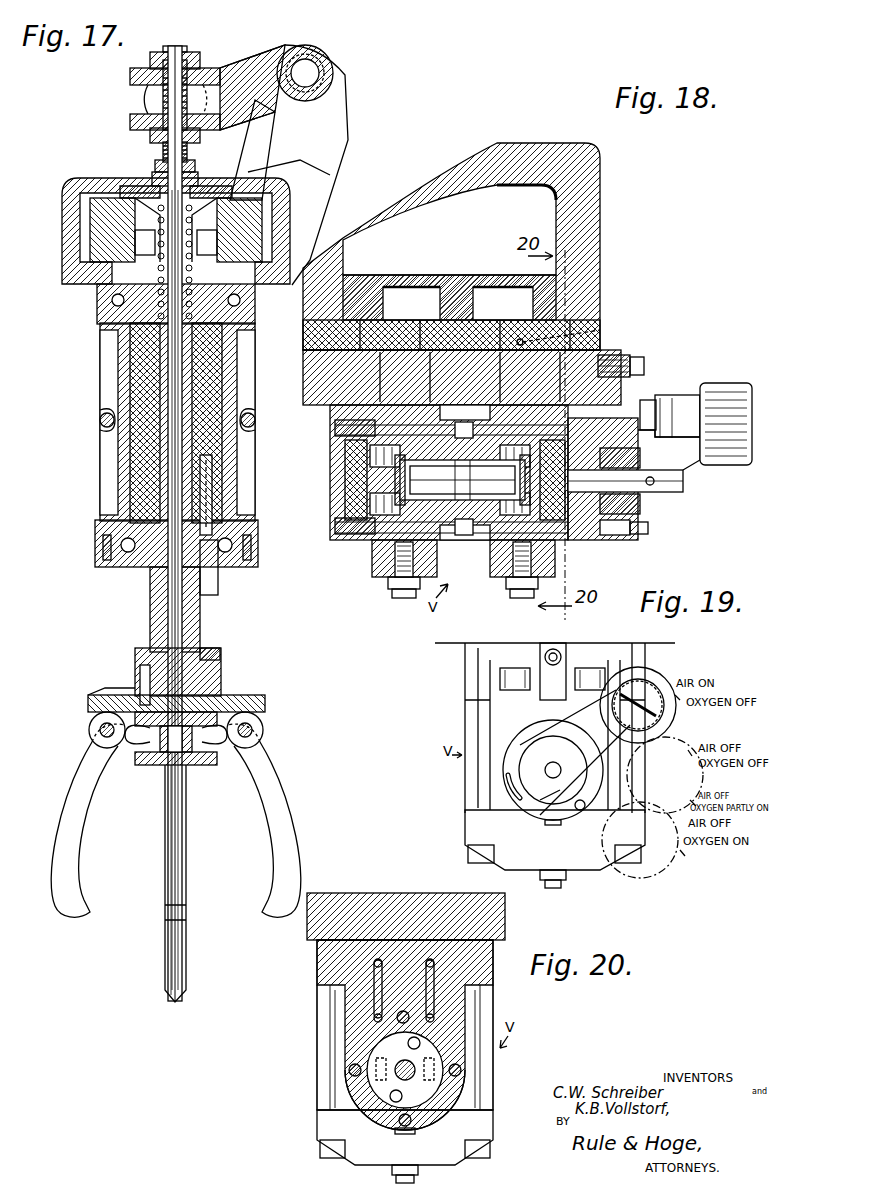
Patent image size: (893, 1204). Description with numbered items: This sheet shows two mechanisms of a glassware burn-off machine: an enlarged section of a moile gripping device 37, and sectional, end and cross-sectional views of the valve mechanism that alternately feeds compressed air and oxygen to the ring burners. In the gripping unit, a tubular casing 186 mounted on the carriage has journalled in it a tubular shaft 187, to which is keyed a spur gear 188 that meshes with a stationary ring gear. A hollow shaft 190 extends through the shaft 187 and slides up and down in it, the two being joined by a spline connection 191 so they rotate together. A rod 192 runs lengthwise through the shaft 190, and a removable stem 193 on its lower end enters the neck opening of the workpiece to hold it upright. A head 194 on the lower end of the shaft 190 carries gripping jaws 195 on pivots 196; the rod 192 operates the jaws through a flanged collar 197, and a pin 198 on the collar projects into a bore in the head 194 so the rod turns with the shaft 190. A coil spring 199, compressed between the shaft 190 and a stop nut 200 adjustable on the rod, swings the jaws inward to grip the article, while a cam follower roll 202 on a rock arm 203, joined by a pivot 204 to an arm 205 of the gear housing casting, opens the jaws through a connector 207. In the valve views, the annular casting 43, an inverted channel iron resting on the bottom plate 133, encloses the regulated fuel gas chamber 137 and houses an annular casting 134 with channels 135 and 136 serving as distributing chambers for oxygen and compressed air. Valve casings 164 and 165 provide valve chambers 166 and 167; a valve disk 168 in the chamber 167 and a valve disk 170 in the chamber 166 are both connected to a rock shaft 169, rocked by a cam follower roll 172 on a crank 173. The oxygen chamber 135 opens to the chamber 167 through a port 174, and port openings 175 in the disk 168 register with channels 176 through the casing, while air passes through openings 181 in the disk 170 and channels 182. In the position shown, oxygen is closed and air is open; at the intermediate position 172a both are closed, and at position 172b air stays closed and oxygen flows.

In FIG. 17, the gripping device 37 is at (283, 682).
In FIG. 18, the annular casting 43 is at (602, 186).
In FIG. 18, the bottom plate 133 is at (598, 328).
In FIG. 19, the bottom plate 133 is at (458, 642).
In FIG. 20, the bottom plate 133 is at (413, 912).
In FIG. 18, the annular casting 134 is at (600, 272).
In FIG. 20, the annular casting 134 is at (368, 898).
In FIG. 18, the annular channel 135 is at (488, 288).
In FIG. 18, the annular channel 136 is at (395, 288).
In FIG. 18, the chamber 137 is at (557, 202).
In FIG. 18, the valve casing 164 is at (362, 541).
In FIG. 18, the valve casing 165 is at (495, 541).
In FIG. 20, the valve casing 165 is at (458, 1082).
In FIG. 18, the valve chamber 166 is at (375, 515).
In FIG. 18, the valve chamber 167 is at (548, 520).
In FIG. 18, the valve disk 168 is at (555, 522).
In FIG. 20, the valve disk 168 is at (385, 1088).
In FIG. 18, the rock shaft 169 is at (665, 484).
In FIG. 19, the rock shaft 169 is at (552, 770).
In FIG. 20, the rock shaft 169 is at (380, 1075).
In FIG. 18, the valve disk 170 is at (365, 495).
In FIG. 18, the cam follower roll 172 is at (725, 392).
In FIG. 19, the cam follower roll 172 is at (645, 688).
In FIG. 19, the intermediate position 172a is at (690, 783).
In FIG. 19, the position 172b is at (665, 858).
In FIG. 18, the crank 173 is at (672, 398).
In FIG. 19, the crank 173 is at (540, 752).
In FIG. 18, the port 174 is at (603, 332).
In FIG. 18, the port openings 175 is at (632, 527).
In FIG. 20, the port openings 175 is at (420, 1045).
In FIG. 18, the channels 176 is at (610, 405).
In FIG. 20, the channels 176 is at (374, 1000).
In FIG. 18, the openings 181 is at (360, 490).
In FIG. 20, the openings 181 is at (332, 1048).
In FIG. 18, the channels 182 is at (340, 455).
In FIG. 20, the channels 182 is at (350, 1040).
In FIG. 17, the tubular casing 186 is at (125, 362).
In FIG. 17, the tubular shaft 187 is at (146, 372).
In FIG. 17, the spur gear 188 is at (95, 222).
In FIG. 17, the hollow shaft 190 is at (162, 600).
In FIG. 17, the spline connection 191 is at (210, 568).
In FIG. 17, the rod 192 is at (182, 620).
In FIG. 17, the stem 193 is at (182, 952).
In FIG. 17, the head 194 is at (216, 673).
In FIG. 17, the gripping jaws 195 is at (265, 770).
In FIG. 17, the pivots 196 is at (252, 731).
In FIG. 17, the flanged collar 197 is at (210, 768).
In FIG. 17, the pin 198 is at (127, 694).
In FIG. 17, the coil spring 199 is at (200, 182).
In FIG. 17, the stop nut 200 is at (197, 168).
In FIG. 17, the cam follower roll 202 is at (143, 99).
In FIG. 17, the rock arm 203 is at (215, 72).
In FIG. 17, the pivot 204 is at (334, 73).
In FIG. 17, the arm 205 is at (346, 122).
In FIG. 17, the connector 207 is at (132, 121).